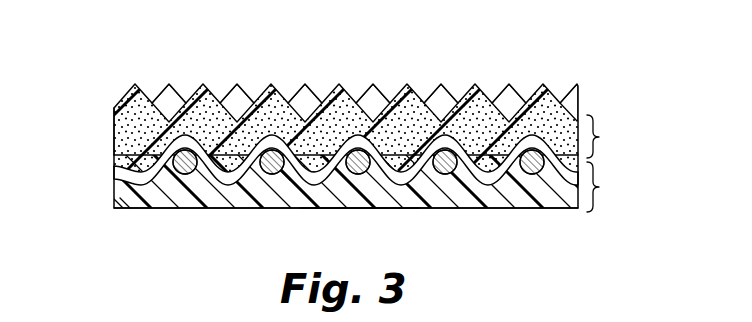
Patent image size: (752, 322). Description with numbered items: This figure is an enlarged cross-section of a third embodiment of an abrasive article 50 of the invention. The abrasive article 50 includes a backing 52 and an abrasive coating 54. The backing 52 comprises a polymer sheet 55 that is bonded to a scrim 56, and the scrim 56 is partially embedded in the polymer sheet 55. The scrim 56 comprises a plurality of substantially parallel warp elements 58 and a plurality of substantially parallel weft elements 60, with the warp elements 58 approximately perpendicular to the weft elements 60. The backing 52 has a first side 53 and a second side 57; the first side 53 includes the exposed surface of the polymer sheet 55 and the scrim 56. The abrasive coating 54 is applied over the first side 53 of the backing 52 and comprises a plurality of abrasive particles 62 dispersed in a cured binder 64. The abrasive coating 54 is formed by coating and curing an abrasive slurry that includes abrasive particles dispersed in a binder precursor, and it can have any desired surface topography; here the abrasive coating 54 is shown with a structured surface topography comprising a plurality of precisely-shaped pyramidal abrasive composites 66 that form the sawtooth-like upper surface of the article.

The abrasive article 50 is at (330, 142).
The backing 52 is at (346, 181).
The first side 53 is at (117, 138).
The abrasive coating 54 is at (343, 103).
The polymer sheet 55 is at (142, 203).
The scrim 56 is at (104, 178).
The second side 57 is at (362, 209).
The warp elements 58 is at (188, 174).
The weft elements 60 is at (287, 178).
The abrasive particles 62 is at (327, 101).
The cured binder 64 is at (402, 90).
The pyramidal abrasive composites 66 is at (208, 86).